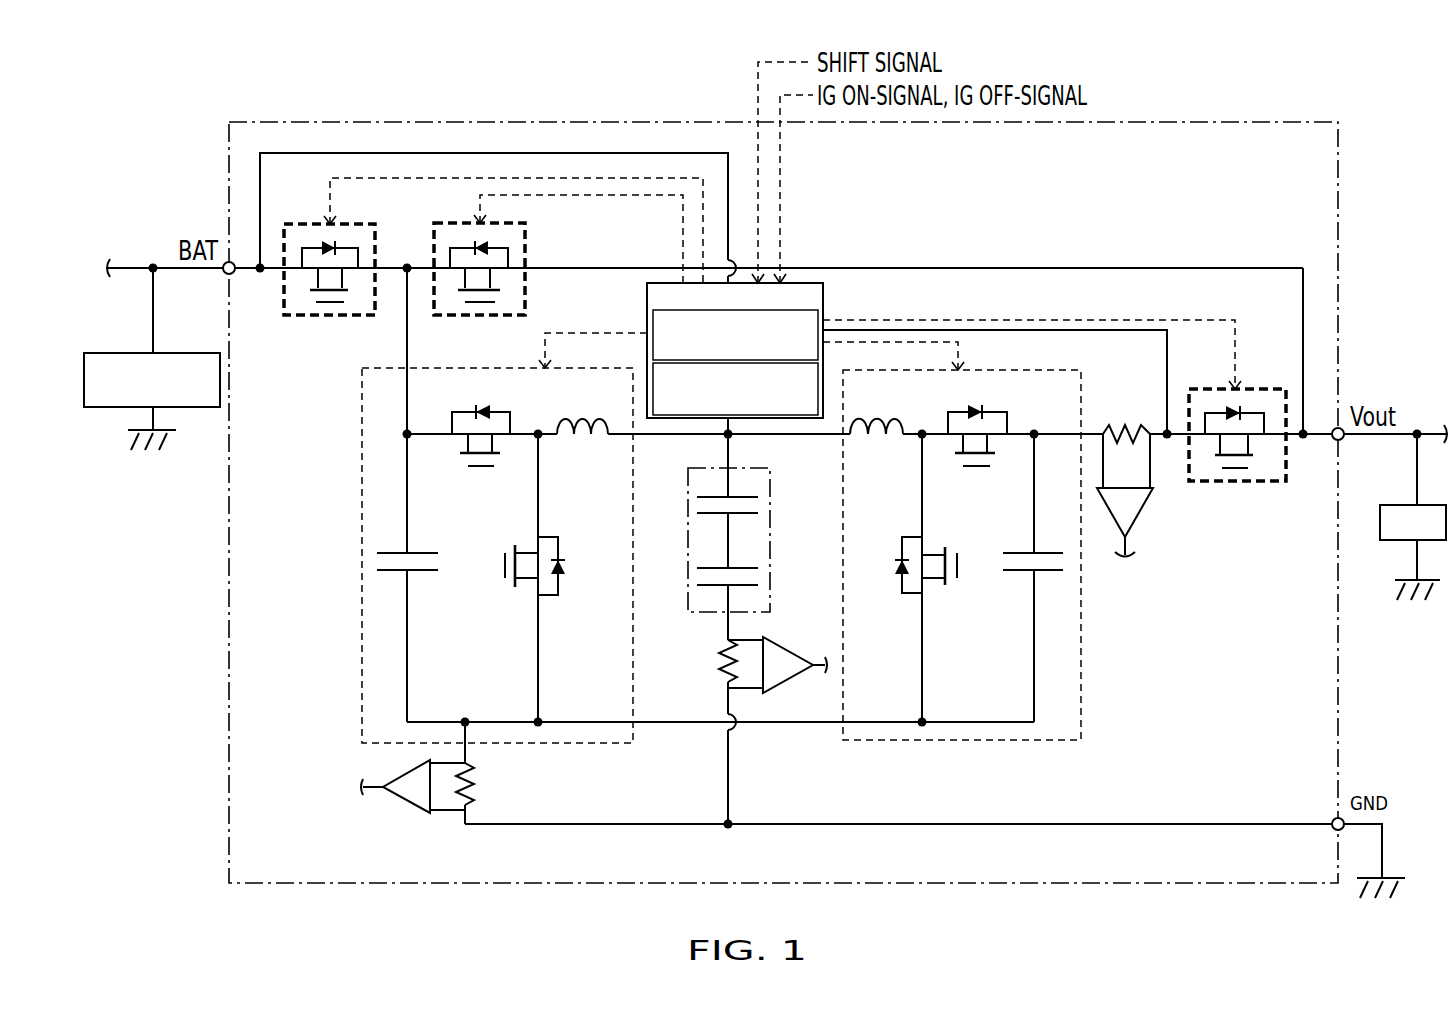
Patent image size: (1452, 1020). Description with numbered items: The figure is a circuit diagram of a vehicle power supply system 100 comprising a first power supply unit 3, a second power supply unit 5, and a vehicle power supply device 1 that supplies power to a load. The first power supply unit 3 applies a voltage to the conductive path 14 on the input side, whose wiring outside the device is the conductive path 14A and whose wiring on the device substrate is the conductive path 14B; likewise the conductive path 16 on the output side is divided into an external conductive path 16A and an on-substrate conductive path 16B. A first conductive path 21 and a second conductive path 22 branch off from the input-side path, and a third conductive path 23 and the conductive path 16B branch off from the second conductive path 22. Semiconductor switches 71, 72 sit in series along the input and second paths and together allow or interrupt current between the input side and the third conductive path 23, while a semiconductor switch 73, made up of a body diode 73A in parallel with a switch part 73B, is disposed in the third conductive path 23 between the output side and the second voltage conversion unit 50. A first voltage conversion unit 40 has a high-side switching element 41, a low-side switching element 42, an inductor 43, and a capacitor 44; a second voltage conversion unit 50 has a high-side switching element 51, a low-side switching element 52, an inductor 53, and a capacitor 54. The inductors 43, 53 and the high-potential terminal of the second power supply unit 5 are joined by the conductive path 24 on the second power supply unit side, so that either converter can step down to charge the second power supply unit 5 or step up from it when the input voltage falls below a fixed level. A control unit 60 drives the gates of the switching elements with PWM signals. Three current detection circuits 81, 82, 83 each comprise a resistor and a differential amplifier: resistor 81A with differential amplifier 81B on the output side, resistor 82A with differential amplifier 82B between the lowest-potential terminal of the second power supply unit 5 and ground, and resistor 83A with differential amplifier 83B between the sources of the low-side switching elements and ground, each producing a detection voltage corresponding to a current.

The vehicle power supply system 100 is at (1246, 86).
The vehicle power supply device 1 is at (1338, 252).
The first power supply unit 3 is at (170, 353).
The second power supply unit 5 is at (688, 585).
The conductive path on the input side 14 is at (250, 330).
The conductive path 14A is at (170, 266).
The conductive path 14B is at (250, 272).
The conductive path on the output side 16 is at (1369, 294).
The conductive path 16A is at (1405, 432).
The conductive path 16B is at (1317, 432).
The first conductive path 21 is at (405, 397).
The second conductive path 22 is at (416, 266).
The third conductive path 23 is at (1095, 434).
The conductive path on the second power supply unit side 24 is at (800, 437).
The first voltage conversion unit 40 is at (362, 610).
The switching element 41 is at (468, 446).
The switching element 42 is at (525, 548).
The inductor 43 is at (575, 418).
The capacitor 44 is at (420, 553).
The second voltage conversion unit 50 is at (1081, 640).
The switching element 51 is at (990, 445).
The switching element 52 is at (925, 556).
The inductor 53 is at (885, 420).
The capacitor 54 is at (1015, 570).
The control unit 60 is at (823, 302).
The semiconductor switch 71 is at (313, 318).
The semiconductor switch 72 is at (525, 238).
The semiconductor switch 73 is at (1256, 449).
The body diode 73A is at (1230, 410).
The switch part 73B is at (1245, 452).
The current detection circuit 81 is at (1155, 489).
The resistor 81A is at (1128, 425).
The differential amplifier 81B is at (1140, 515).
The current detection circuit 82 is at (743, 720).
The resistor 82A is at (718, 656).
The differential amplifier 82B is at (778, 688).
The current detection circuit 83 is at (431, 797).
The resistor 83A is at (475, 787).
The differential amplifier 83B is at (407, 805).